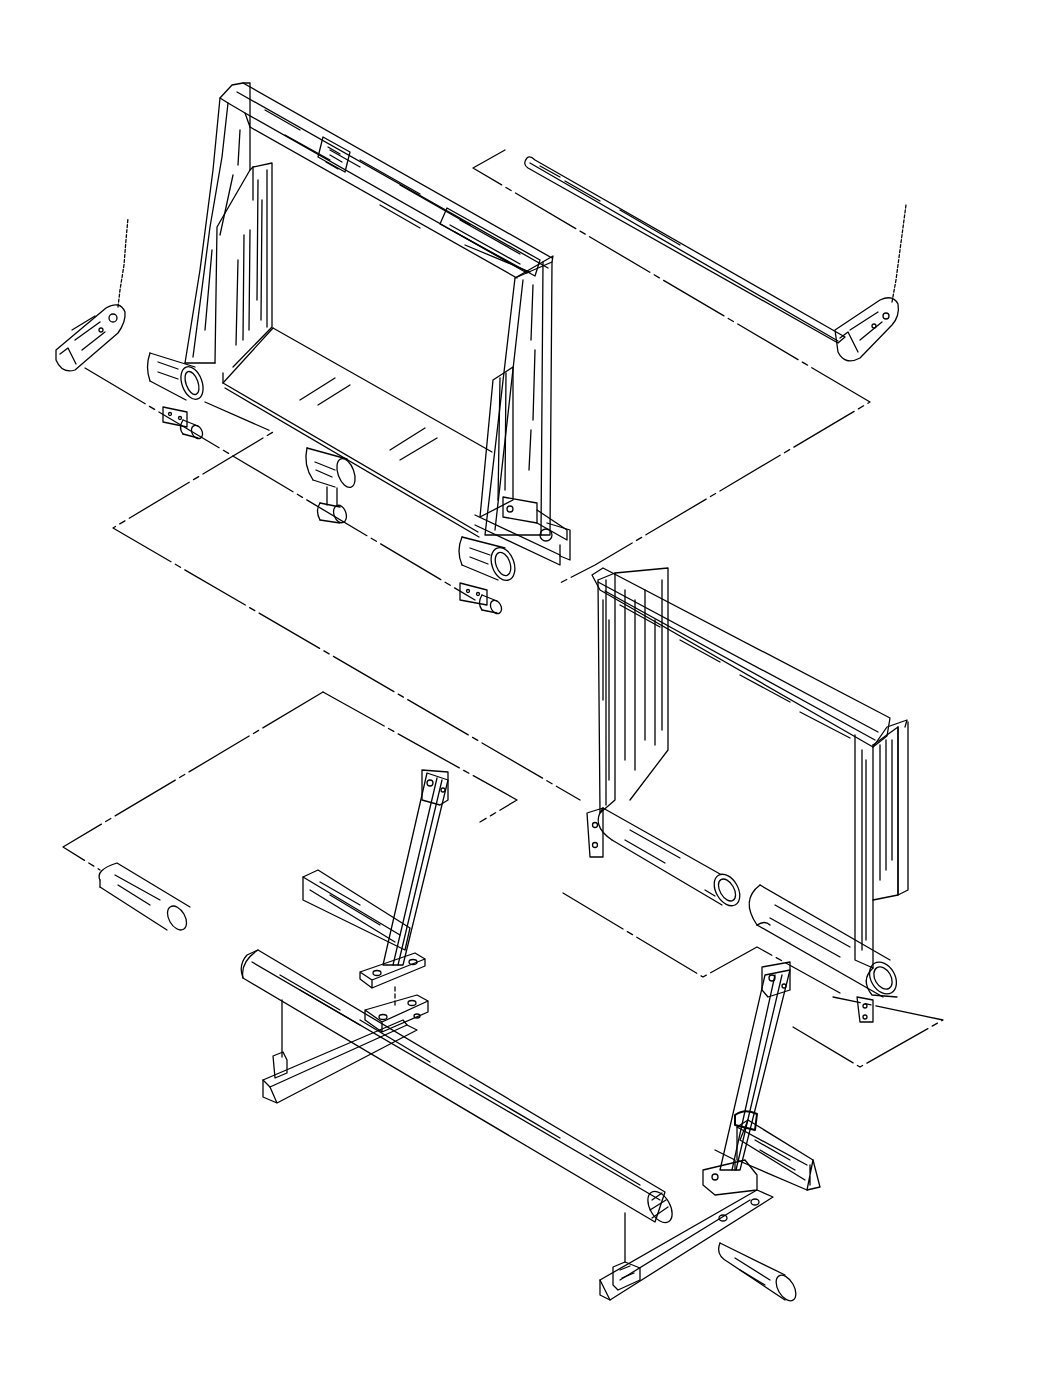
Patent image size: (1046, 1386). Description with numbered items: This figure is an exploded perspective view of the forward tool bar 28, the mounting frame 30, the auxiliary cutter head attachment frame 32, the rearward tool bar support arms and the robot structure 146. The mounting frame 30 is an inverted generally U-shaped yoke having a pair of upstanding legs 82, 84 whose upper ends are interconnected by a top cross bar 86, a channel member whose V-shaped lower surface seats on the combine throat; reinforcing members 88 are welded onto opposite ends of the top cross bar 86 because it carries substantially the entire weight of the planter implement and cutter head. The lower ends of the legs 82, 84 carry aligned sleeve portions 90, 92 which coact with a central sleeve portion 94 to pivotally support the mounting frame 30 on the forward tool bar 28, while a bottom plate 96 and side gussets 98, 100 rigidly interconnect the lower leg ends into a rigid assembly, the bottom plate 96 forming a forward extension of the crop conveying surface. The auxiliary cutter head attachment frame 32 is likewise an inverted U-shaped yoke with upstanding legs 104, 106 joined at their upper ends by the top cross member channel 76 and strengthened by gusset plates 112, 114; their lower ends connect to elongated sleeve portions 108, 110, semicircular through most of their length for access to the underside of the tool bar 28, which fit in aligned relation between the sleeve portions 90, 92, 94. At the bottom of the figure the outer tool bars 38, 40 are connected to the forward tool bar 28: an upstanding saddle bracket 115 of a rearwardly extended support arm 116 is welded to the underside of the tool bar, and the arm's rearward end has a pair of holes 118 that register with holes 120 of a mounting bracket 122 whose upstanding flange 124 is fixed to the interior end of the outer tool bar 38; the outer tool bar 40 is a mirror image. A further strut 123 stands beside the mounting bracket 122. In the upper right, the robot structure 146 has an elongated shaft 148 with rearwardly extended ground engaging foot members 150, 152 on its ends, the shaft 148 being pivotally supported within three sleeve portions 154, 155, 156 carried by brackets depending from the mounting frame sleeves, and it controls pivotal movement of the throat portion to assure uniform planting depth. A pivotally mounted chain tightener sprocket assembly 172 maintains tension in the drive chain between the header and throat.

The mounting frame 30 is at (218, 70).
The auxiliary cutter head attachment frame 32 is at (885, 702).
The forward tool bar 28 is at (480, 1092).
The outer tool bar 38 is at (795, 1150).
The outer tool bar 40 is at (342, 890).
The top cross member channel 76 is at (750, 660).
The upstanding leg 82 is at (243, 146).
The upstanding leg 84 is at (532, 330).
The top cross bar 86 is at (392, 172).
The reinforcing members 88 is at (313, 132).
The sleeve portion 90 is at (160, 385).
The sleeve portion 92 is at (480, 560).
The central sleeve portion 94 is at (310, 472).
The bottom plate 96 is at (320, 373).
The side gusset 98 is at (263, 256).
The side gusset 100 is at (540, 437).
The upstanding leg 104 is at (607, 680).
The upstanding leg 106 is at (865, 905).
The elongated sleeve portion 108 is at (685, 845).
The elongated sleeve portion 110 is at (800, 912).
The gusset plate 112 is at (655, 712).
The gusset plate 114 is at (900, 780).
The saddle bracket 115 is at (632, 1280).
The support arm 116 is at (675, 1245).
The holes 118 is at (745, 1222).
The holes 120 is at (708, 1170).
The mounting bracket 122 is at (712, 1165).
The front strut 123 is at (748, 1073).
The upstanding flange 124 is at (757, 1130).
The robot structure 146 is at (698, 198).
The elongated shaft 148 is at (740, 287).
The ground engaging foot member 150 is at (877, 355).
The ground engaging foot member 152 is at (88, 320).
The sleeve portion 154 is at (180, 432).
The sleeve portion 155 is at (483, 613).
The sleeve portion 156 is at (332, 522).
The chain tightener sprocket assembly 172 is at (527, 507).